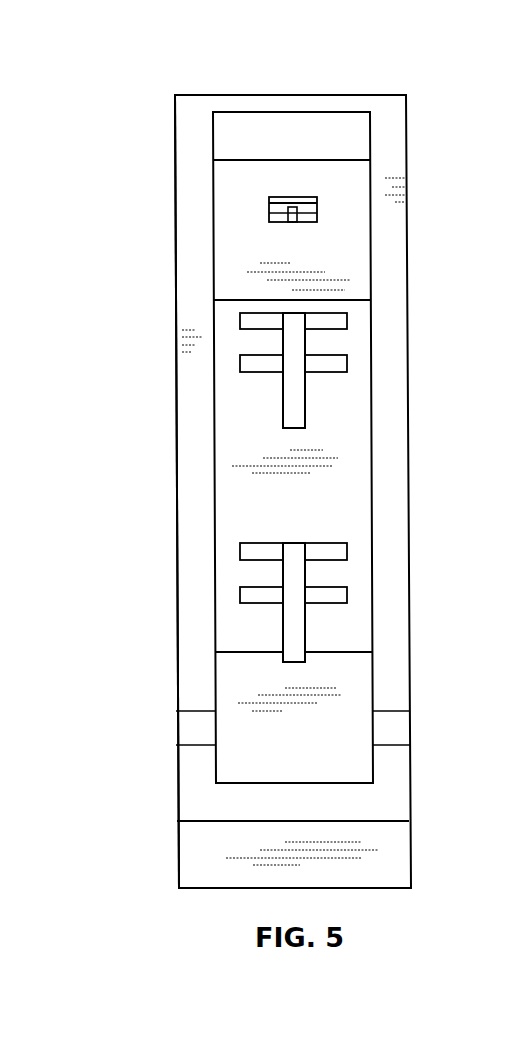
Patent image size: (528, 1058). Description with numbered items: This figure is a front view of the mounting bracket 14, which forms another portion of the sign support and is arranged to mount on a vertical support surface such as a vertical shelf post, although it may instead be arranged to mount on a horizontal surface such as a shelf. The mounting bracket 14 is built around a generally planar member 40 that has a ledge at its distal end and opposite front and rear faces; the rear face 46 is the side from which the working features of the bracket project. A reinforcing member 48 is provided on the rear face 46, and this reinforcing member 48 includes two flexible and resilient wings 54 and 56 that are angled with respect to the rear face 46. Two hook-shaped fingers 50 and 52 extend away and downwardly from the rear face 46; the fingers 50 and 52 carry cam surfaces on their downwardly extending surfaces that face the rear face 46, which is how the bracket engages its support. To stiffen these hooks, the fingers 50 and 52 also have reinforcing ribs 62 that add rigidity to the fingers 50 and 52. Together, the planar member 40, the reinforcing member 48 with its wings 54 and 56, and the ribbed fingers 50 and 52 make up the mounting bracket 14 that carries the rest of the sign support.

The mounting bracket 14 is at (106, 62).
The planar member 40 is at (176, 372).
The rear face 46 is at (190, 210).
The reinforcing member 48 is at (242, 400).
The hook-shaped finger 50 is at (305, 405).
The hook-shaped finger 52 is at (294, 568).
The wing 54 is at (242, 250).
The wing 56 is at (233, 683).
The reinforcing ribs 62 is at (347, 321).